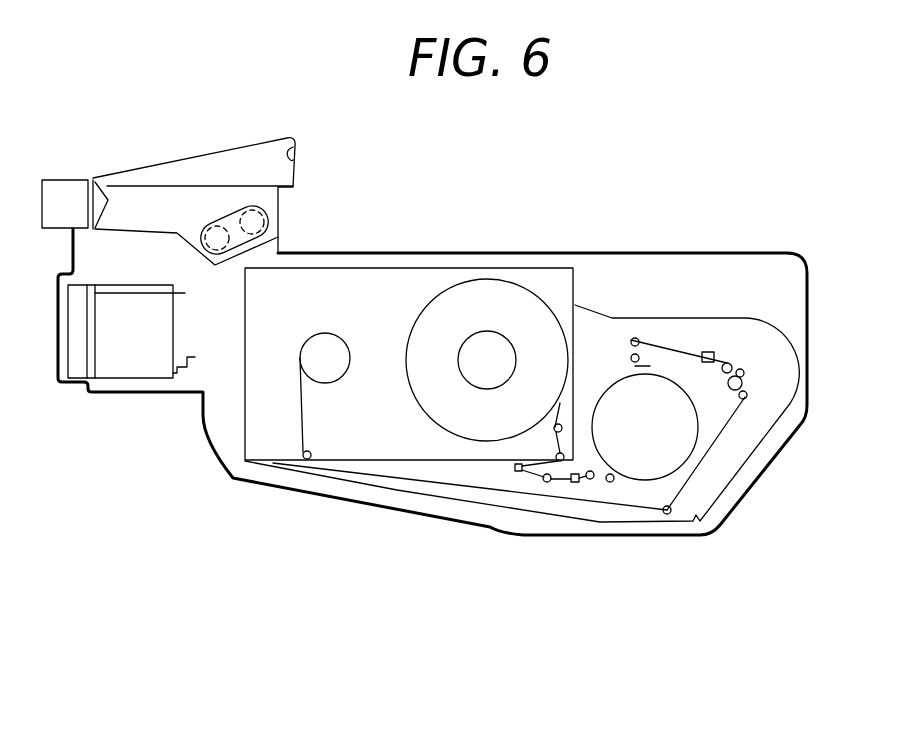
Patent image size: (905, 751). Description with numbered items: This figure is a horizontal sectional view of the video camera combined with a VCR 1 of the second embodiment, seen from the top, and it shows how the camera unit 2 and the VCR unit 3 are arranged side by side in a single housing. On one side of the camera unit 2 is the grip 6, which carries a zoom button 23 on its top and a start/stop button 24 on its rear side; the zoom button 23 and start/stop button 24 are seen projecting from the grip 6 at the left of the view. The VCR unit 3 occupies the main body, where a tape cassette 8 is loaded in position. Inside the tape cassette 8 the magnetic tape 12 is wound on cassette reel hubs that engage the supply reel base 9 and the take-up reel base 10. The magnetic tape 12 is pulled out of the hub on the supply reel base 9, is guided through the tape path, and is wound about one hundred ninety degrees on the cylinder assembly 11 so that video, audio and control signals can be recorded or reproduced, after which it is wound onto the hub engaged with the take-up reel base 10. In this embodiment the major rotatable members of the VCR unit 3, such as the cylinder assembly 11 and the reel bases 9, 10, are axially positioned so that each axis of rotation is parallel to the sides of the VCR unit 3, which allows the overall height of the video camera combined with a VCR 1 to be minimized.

The video camera combined with a VCR 1 is at (424, 346).
The camera unit 2 is at (120, 398).
The VCR unit 3 is at (443, 527).
The grip 6 is at (202, 182).
The tape cassette 8 is at (446, 268).
The supply reel base 9 is at (492, 295).
The take-up reel base 10 is at (327, 334).
The cylinder assembly 11 is at (643, 468).
The magnetic tape 12 is at (667, 349).
The zoom button 23 is at (253, 221).
The start/stop button 24 is at (288, 152).